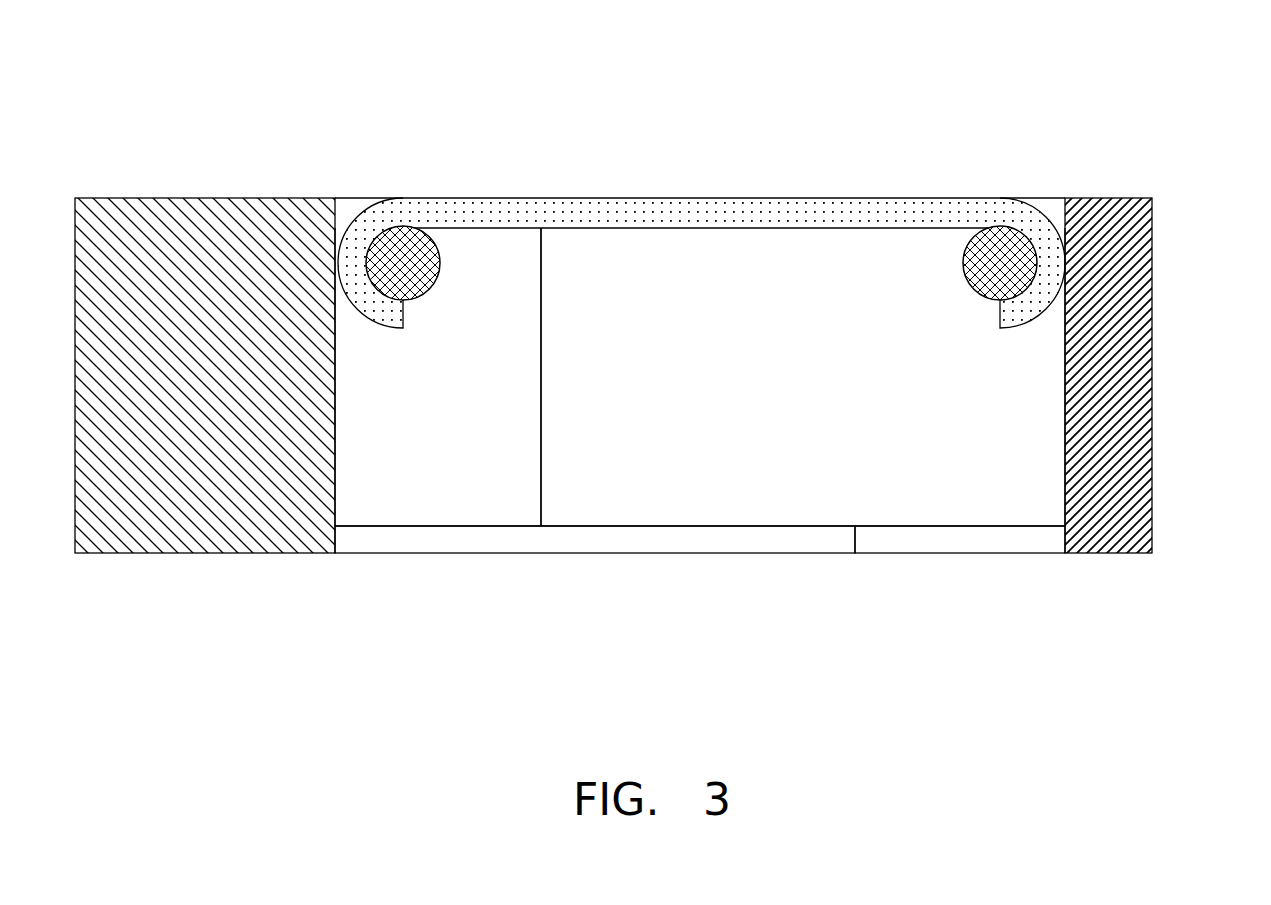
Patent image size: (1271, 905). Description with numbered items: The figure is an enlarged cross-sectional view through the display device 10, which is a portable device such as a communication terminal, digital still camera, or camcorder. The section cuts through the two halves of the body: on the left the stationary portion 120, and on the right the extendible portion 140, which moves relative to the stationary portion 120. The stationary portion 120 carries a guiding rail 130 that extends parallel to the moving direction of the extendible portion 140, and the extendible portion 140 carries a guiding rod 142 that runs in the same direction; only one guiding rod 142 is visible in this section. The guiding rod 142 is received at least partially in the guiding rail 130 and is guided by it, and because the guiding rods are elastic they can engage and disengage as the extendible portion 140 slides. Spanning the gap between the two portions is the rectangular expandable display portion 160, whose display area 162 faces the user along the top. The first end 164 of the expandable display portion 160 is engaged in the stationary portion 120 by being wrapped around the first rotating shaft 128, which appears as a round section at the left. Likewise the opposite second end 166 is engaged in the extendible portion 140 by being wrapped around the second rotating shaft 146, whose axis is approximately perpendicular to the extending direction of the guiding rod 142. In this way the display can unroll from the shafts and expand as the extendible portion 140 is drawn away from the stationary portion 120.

The display device 10 is at (672, 36).
The stationary portion 120 is at (733, 542).
The first rotating shaft 128 is at (405, 262).
The guiding rail 130 is at (493, 483).
The extendible portion 140 is at (936, 543).
The guiding rod 142 is at (922, 472).
The second rotating shaft 146 is at (997, 258).
The expandable display portion 160 is at (793, 215).
The display area 162 is at (625, 197).
The first end 164 is at (357, 275).
The second end 166 is at (1053, 280).